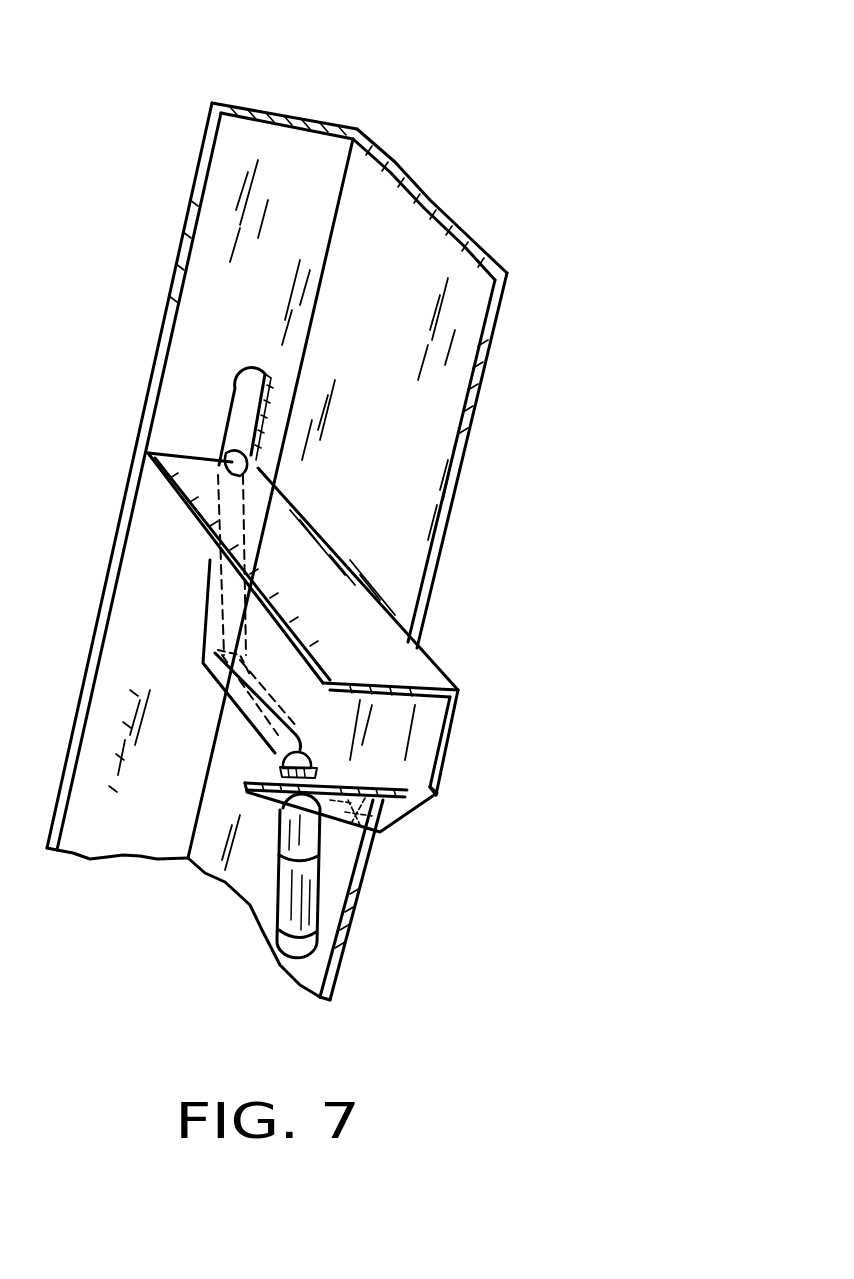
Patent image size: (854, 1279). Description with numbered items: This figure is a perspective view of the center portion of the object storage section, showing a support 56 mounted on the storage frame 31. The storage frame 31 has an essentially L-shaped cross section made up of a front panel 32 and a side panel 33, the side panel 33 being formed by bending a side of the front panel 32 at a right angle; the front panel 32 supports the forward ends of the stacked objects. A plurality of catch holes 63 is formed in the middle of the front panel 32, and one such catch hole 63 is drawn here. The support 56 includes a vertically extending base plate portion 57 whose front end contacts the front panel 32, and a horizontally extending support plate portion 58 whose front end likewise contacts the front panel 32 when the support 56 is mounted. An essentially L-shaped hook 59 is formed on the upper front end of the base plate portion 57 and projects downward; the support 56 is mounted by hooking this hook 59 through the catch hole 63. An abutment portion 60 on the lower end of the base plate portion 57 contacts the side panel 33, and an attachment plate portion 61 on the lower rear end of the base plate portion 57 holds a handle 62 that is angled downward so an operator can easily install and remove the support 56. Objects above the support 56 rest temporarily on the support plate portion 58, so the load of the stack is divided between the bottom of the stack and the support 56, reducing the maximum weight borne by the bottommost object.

The storage frame 31 is at (488, 365).
The front panel 32 is at (287, 148).
The side panel 33 is at (420, 236).
The support 56 is at (453, 668).
The base plate portion 57 is at (226, 637).
The support plate portion 58 is at (333, 596).
The hook 59 is at (222, 540).
The abutment portion 60 is at (283, 756).
The attachment plate portion 61 is at (355, 812).
The handle 62 is at (280, 902).
The catch hole 63 is at (232, 392).